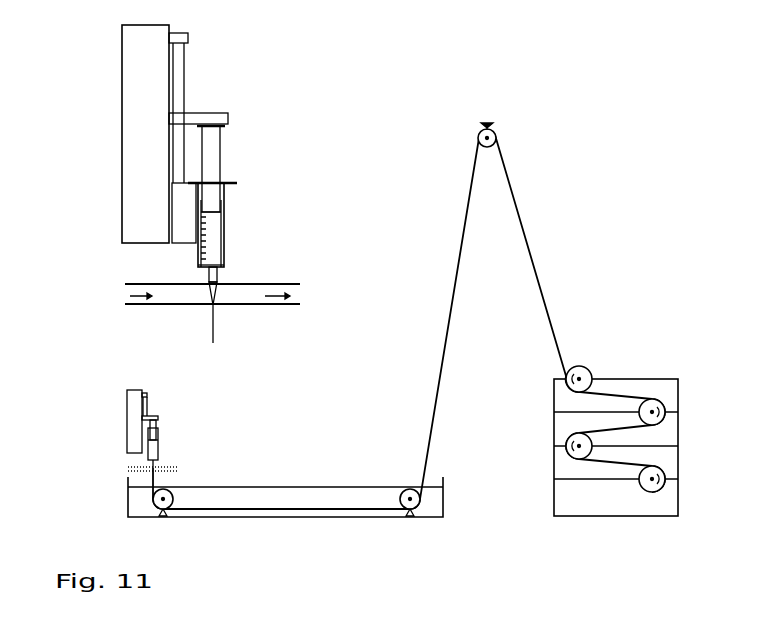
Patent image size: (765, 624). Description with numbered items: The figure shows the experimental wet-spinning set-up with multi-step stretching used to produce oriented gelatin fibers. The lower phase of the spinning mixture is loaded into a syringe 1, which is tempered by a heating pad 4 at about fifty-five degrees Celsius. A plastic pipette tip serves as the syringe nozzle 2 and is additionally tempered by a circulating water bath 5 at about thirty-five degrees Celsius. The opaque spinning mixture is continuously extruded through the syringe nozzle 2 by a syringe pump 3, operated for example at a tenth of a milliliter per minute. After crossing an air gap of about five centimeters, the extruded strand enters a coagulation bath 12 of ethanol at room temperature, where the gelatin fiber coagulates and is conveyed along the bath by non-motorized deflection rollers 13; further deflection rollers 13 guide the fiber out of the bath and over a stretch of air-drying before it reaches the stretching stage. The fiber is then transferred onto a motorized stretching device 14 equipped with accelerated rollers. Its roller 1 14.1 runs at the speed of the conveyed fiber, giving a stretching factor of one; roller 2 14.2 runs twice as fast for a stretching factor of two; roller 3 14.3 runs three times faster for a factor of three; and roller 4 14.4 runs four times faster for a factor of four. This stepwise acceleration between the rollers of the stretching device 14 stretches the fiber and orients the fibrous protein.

The syringe 1 is at (212, 165).
The syringe nozzle 2 is at (213, 305).
The syringe pump 3 is at (175, 134).
The heating pad 4 is at (223, 213).
The circulating water bath 5 is at (171, 296).
The coagulation bath 12 is at (238, 493).
The non-motorized deflection rollers 13 is at (497, 133).
The motorized stretching device 14 is at (618, 415).
The roller 1 14.1 is at (578, 388).
The roller 2 14.2 is at (651, 421).
The roller 3 14.3 is at (578, 455).
The roller 4 14.4 is at (651, 489).